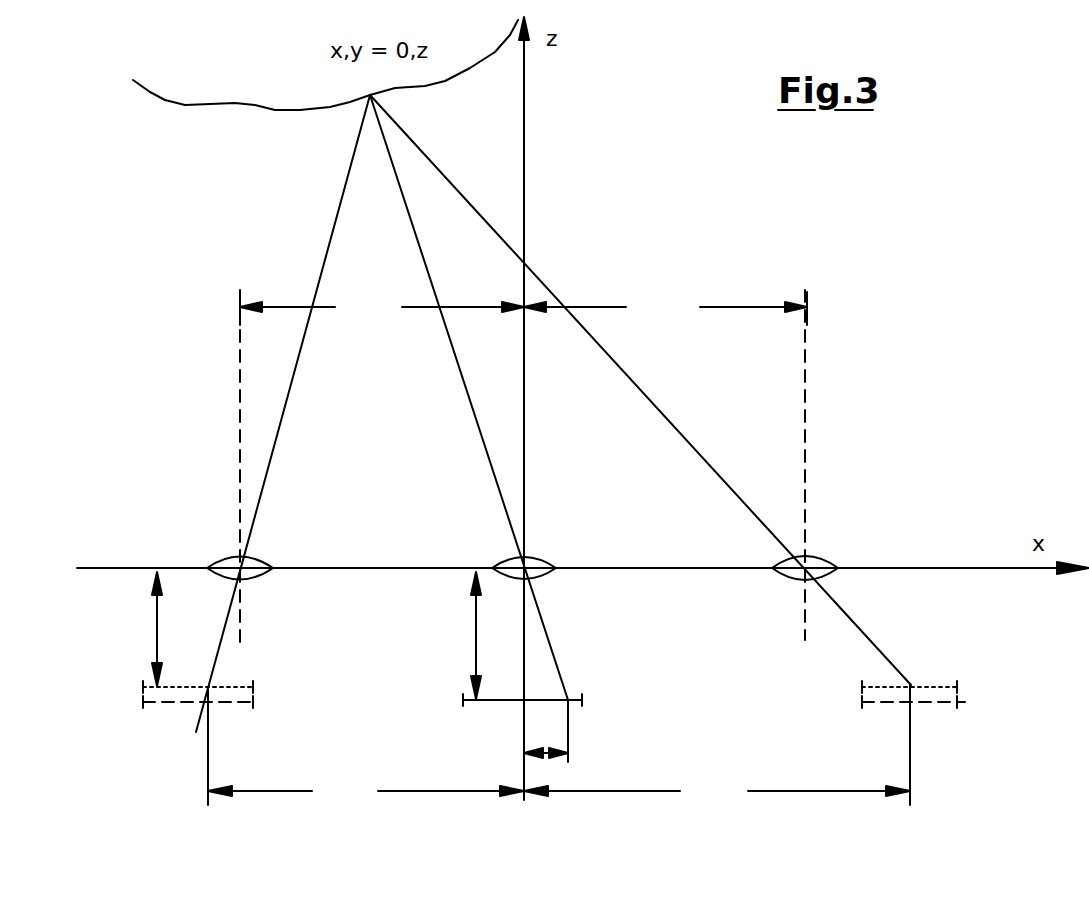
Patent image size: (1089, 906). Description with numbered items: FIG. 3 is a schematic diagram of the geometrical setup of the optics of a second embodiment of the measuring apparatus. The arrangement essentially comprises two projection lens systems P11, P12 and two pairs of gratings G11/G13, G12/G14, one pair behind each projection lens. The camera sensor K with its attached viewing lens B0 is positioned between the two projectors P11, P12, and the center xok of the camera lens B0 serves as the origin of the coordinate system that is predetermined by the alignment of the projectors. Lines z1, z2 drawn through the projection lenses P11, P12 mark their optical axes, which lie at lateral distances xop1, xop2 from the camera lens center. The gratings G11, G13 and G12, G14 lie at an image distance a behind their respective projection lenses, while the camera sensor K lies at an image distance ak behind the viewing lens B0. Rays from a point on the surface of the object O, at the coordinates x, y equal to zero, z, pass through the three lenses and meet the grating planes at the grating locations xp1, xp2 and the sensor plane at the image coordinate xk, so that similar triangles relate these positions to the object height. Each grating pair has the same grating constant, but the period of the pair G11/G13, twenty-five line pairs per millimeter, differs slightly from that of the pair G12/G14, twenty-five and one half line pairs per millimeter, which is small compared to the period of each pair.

The object O is at (164, 100).
The projection lens system P11 is at (218, 560).
The projection lens system P12 is at (785, 564).
The viewing lens B0 is at (540, 576).
The optical axis of first projection lens system z1 is at (233, 556).
The optical axis of second projection lens system z2 is at (803, 572).
The grating G11 is at (237, 682).
The grating G13 is at (232, 705).
The grating G12 is at (937, 684).
The grating G14 is at (933, 704).
The camera sensor K is at (500, 703).
The image distance of projection lens systems a is at (155, 629).
The image distance of camera lens ak is at (480, 635).
The image coordinate on camera sensor xk is at (550, 758).
The center of camera lens xok is at (527, 564).
The lateral offset of first projection lens xop1 is at (382, 310).
The lateral offset of second projection lens xop2 is at (665, 310).
The grating location of first projector xp1 is at (366, 751).
The grating location of second projector xp2 is at (717, 748).